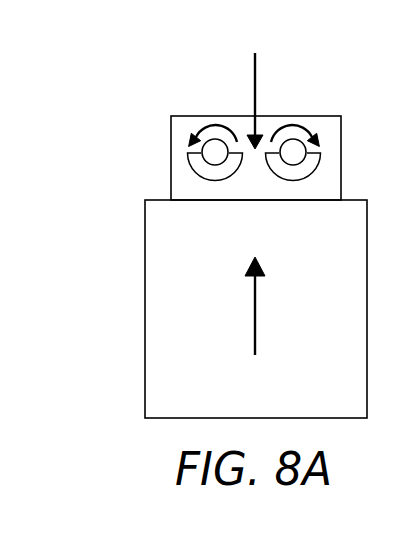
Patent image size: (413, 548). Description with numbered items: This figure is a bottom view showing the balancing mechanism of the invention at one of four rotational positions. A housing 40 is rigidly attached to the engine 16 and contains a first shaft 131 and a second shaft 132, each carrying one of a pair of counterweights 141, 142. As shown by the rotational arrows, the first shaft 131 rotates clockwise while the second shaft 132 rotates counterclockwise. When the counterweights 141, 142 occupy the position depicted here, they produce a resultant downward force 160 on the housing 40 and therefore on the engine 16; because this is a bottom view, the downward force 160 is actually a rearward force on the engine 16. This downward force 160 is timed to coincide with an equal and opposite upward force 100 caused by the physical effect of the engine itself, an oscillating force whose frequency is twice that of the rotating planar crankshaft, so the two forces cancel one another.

The engine 16 is at (145, 316).
The housing 40 is at (336, 126).
The upward force 100 is at (256, 312).
The first shaft 131 is at (300, 150).
The second shaft 132 is at (207, 152).
The counterweight 141 is at (307, 169).
The counterweight 142 is at (197, 165).
The downward force 160 is at (255, 78).